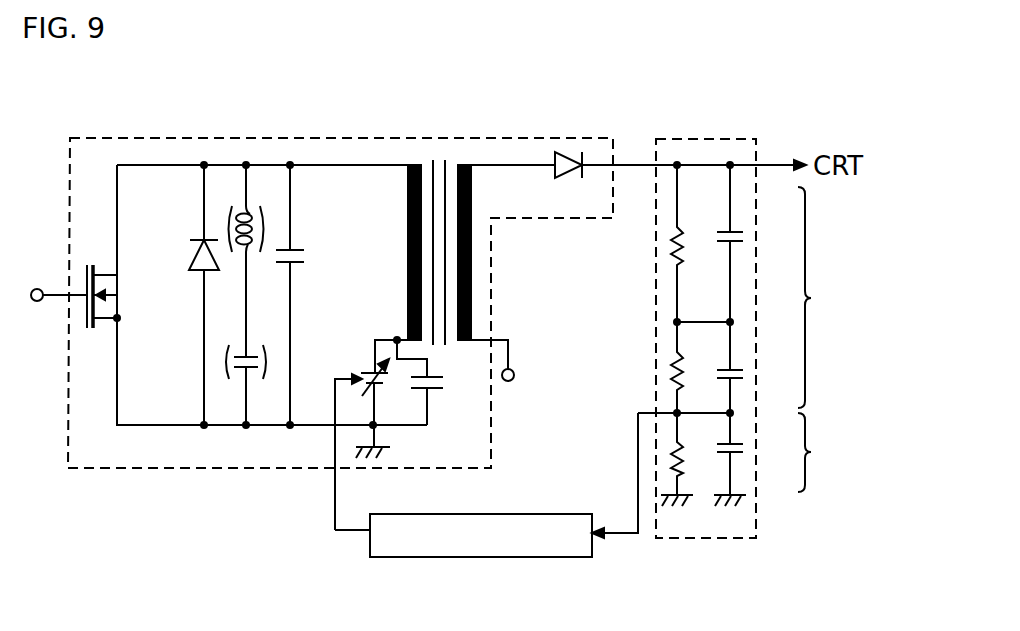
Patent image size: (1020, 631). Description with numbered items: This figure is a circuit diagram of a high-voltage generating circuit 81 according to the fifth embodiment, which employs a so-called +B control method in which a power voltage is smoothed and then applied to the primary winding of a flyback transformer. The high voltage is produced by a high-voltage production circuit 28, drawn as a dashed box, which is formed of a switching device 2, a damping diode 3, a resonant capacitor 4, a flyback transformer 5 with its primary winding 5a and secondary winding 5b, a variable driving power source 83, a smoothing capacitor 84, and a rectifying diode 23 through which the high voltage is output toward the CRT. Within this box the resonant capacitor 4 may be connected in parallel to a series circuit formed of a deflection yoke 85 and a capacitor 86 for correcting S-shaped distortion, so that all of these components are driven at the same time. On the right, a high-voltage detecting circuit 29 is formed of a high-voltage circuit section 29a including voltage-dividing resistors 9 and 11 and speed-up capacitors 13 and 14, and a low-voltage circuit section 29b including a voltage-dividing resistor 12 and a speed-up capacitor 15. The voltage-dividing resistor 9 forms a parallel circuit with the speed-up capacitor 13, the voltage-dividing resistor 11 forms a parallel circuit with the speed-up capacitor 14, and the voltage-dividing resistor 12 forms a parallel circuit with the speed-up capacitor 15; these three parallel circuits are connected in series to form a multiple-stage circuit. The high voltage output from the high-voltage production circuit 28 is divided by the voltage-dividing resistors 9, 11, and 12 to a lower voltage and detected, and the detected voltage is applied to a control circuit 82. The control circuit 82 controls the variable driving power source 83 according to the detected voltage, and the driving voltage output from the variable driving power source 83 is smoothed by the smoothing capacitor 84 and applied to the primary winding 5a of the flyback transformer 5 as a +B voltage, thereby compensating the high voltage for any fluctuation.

The high-voltage generating circuit 81 is at (112, 116).
The high-voltage production circuit 28 is at (300, 136).
The switching device 2 is at (108, 322).
The damping diode 3 is at (196, 270).
The deflection yoke 85 is at (257, 218).
The capacitor for correcting S-shaped distortion 86 is at (252, 370).
The resonant capacitor 4 is at (296, 248).
The flyback transformer 5 is at (451, 217).
The primary winding 5a is at (408, 214).
The secondary winding 5b is at (471, 212).
The rectifying diode 23 is at (580, 152).
The variable driving power source 83 is at (378, 388).
The smoothing capacitor 84 is at (433, 390).
The control circuit 82 is at (460, 557).
The high-voltage detecting circuit 29 is at (715, 138).
The high-voltage circuit section 29a is at (730, 289).
The low-voltage circuit section 29b is at (726, 459).
The voltage-dividing resistor 9 is at (672, 250).
The voltage-dividing resistor 11 is at (672, 378).
The voltage-dividing resistor 12 is at (672, 462).
The speed-up capacitor 13 is at (735, 230).
The speed-up capacitor 14 is at (735, 368).
The speed-up capacitor 15 is at (735, 445).